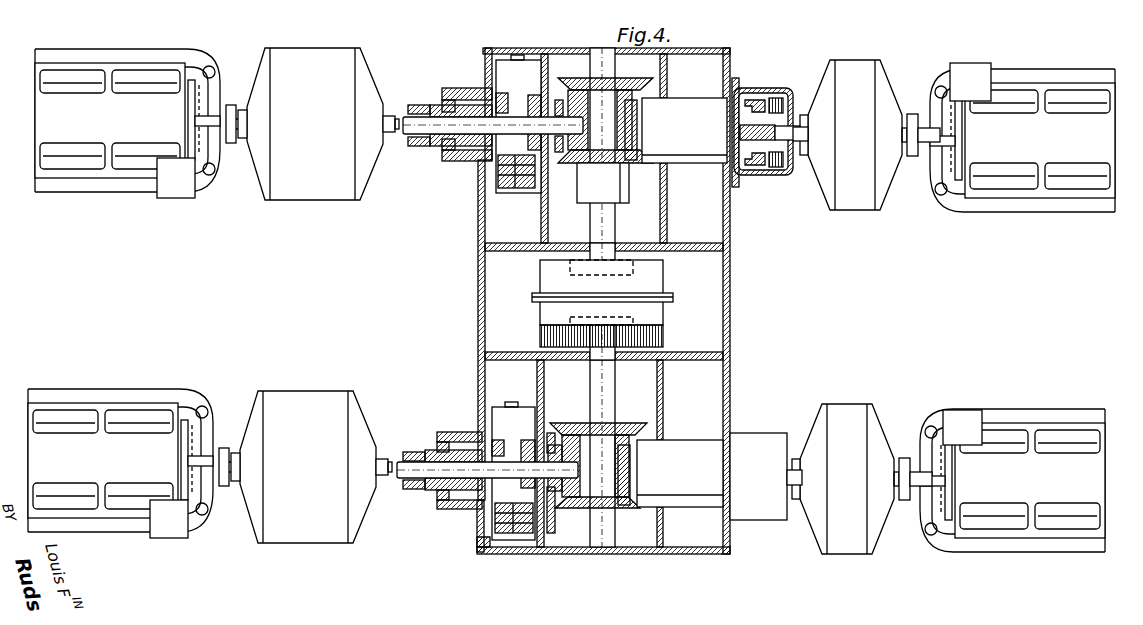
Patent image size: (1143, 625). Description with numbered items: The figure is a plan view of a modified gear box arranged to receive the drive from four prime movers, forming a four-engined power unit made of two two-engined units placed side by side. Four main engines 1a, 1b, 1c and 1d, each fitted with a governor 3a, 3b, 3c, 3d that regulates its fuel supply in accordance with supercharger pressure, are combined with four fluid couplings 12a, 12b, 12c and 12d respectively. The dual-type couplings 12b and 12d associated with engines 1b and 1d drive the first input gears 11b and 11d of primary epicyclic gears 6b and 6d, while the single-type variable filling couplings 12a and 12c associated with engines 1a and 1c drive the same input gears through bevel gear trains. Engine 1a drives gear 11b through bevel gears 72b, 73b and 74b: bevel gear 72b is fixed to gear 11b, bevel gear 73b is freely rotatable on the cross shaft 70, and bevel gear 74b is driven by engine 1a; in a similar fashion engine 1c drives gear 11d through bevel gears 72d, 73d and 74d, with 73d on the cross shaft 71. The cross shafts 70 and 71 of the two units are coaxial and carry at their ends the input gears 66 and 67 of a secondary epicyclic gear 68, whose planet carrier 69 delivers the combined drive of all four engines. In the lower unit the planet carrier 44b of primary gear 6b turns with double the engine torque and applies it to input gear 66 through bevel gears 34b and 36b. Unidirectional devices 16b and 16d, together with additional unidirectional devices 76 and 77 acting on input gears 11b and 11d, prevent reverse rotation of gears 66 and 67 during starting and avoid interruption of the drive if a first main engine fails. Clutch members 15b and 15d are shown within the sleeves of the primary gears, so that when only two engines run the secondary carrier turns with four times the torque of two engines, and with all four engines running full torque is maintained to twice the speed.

The main engine 1a is at (1012, 480).
The main engine 1b is at (120, 460).
The main engine 1c is at (1022, 140).
The main engine 1d is at (127, 120).
The fluid coupling 12a is at (830, 420).
The fluid coupling 12b is at (305, 467).
The fluid coupling 12c is at (835, 195).
The fluid coupling 12d is at (312, 124).
The governor 3a is at (955, 412).
The governor 3b is at (180, 530).
The governor 3c is at (958, 76).
The governor 3d is at (178, 199).
The unidirectional device 16d is at (457, 88).
The unidirectional device 16b is at (437, 436).
The clutch member 15d is at (498, 170).
The clutch member 15b is at (485, 433).
The primary epicyclic gear 6d is at (507, 72).
The primary epicyclic gear 6b is at (505, 418).
The first input gear 11d is at (535, 100).
The first input gear 11b is at (528, 440).
The bevel gear 72d is at (583, 95).
The bevel gear 72b is at (560, 500).
The bevel gear 74d is at (640, 112).
The bevel gear 74b is at (640, 510).
The bevel gear 73d is at (603, 166).
The bevel gear 73b is at (603, 510).
The cross shaft 71 is at (617, 221).
The cross shaft 70 is at (615, 393).
The additional unidirectional device 77 is at (770, 88).
The additional unidirectional device 76 is at (768, 445).
The input gear 67 is at (633, 268).
The secondary epicyclic gear 68 is at (630, 282).
The planet carrier 69 is at (660, 297).
The input gear 66 is at (633, 320).
The bevel gear 36b is at (567, 425).
The planet carrier 44b is at (481, 548).
The bevel gear 34b is at (550, 520).